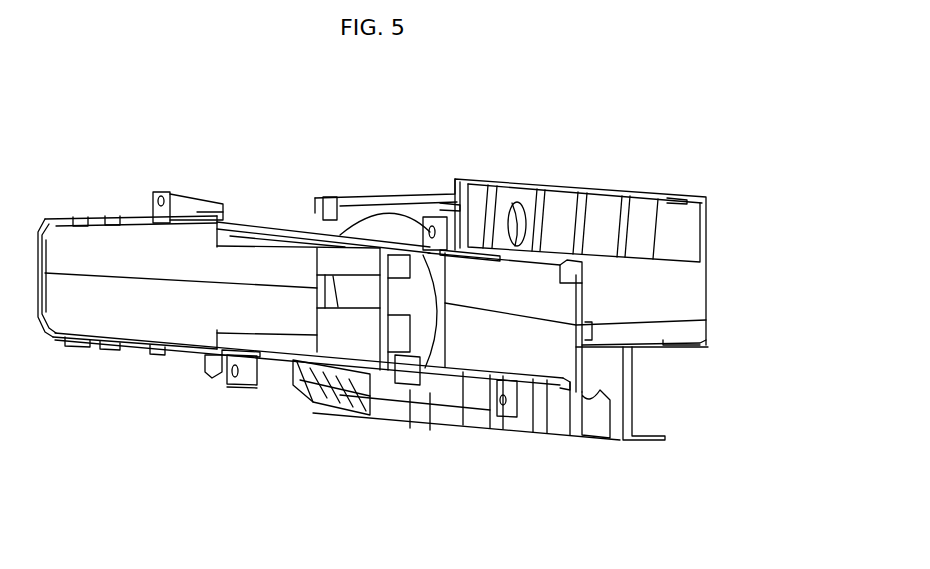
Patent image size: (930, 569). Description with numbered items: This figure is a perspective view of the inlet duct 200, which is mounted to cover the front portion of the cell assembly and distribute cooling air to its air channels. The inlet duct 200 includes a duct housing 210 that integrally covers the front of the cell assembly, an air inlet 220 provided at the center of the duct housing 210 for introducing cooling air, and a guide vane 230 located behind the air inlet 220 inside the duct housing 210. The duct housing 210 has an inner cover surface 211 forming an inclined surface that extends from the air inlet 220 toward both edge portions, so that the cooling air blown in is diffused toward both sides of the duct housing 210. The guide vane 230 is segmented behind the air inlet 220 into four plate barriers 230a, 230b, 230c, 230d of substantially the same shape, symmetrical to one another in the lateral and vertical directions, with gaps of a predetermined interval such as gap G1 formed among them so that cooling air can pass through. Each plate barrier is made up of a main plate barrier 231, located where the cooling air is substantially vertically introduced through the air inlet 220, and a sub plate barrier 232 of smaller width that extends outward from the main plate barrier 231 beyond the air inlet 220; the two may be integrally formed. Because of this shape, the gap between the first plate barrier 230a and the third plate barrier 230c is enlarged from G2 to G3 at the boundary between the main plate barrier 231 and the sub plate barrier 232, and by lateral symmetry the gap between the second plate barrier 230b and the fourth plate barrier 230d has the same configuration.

The inlet duct 200 is at (147, 96).
The inner cover surface 211 is at (131, 255).
The duct housing 210 is at (266, 222).
The air inlet 220 is at (383, 200).
The guide vane 230 is at (207, 370).
The first plate barrier 230a is at (334, 248).
The second plate barrier 230b is at (405, 255).
The third plate barrier 230c is at (337, 455).
The fourth plate barrier 230d is at (407, 360).
The main plate barrier 231 is at (338, 340).
The sub plate barrier 232 is at (263, 340).
The gap G1 is at (347, 335).
The gap G2 is at (359, 262).
The gap G3 is at (253, 325).